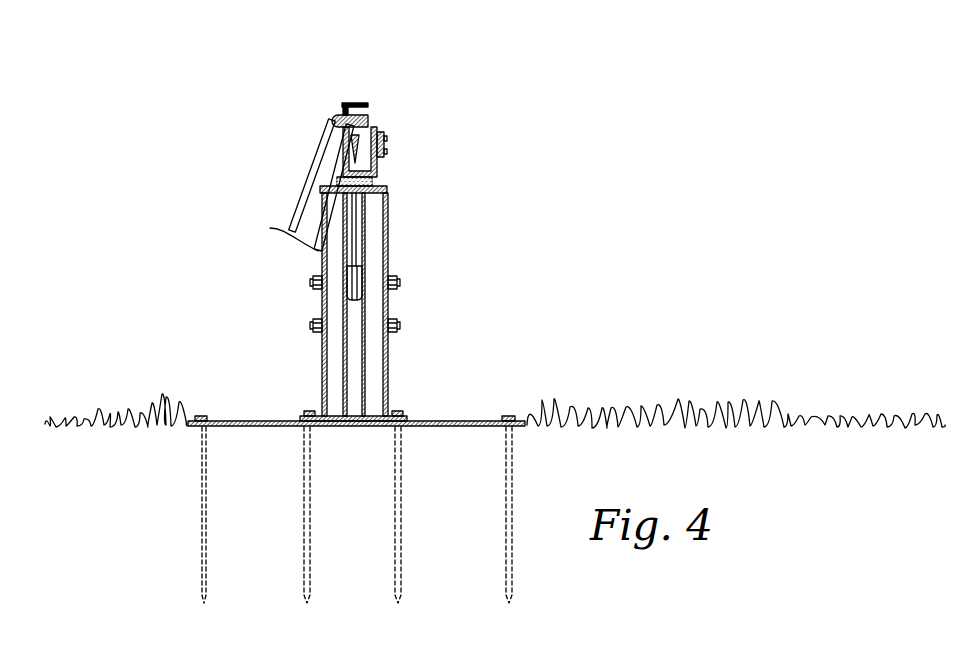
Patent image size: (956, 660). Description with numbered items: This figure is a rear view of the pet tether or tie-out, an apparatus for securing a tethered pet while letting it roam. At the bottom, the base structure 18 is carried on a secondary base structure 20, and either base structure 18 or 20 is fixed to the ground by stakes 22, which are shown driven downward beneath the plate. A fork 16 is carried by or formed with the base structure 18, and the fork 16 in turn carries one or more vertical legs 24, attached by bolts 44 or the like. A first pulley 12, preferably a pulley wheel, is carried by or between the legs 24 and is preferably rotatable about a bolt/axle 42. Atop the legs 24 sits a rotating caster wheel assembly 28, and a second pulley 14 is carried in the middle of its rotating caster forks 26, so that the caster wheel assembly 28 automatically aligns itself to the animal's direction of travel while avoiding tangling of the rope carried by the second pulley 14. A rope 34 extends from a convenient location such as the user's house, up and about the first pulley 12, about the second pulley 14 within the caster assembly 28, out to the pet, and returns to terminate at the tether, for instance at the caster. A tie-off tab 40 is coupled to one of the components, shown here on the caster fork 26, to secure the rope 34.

The first pulley 12 is at (366, 272).
The second pulley 14 is at (358, 142).
The fork 16 is at (321, 356).
The base structure 18 is at (330, 413).
The secondary base structure 20 is at (237, 419).
The stakes 22 is at (507, 415).
The legs 24 is at (333, 301).
The caster forks 26 is at (374, 171).
The rotating caster wheel assembly 28 is at (374, 182).
The rope 34 is at (316, 236).
The tie-off tab 40 is at (340, 112).
The bolt/axle 42 is at (396, 281).
The bolts 44 is at (396, 322).